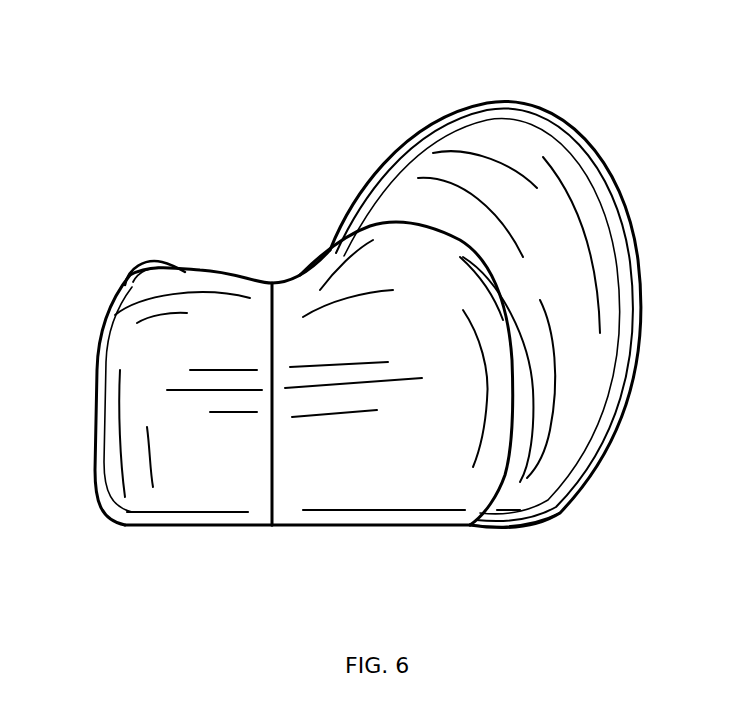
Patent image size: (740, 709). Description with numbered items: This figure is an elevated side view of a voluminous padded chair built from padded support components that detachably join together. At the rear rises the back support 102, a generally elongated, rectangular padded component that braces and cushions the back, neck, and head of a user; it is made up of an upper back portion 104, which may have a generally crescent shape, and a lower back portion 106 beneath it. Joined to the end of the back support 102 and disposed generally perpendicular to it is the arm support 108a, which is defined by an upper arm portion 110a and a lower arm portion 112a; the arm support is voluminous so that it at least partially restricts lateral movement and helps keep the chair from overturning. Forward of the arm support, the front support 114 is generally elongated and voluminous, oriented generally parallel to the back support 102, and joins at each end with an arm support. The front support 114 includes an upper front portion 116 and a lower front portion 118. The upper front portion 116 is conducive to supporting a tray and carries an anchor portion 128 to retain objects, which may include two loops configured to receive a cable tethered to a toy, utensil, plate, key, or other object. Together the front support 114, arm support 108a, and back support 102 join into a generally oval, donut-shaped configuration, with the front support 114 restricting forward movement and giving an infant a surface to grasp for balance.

The back support 102 is at (575, 260).
The upper back portion 104 is at (502, 100).
The lower back portion 106 is at (508, 533).
The arm support 108a is at (425, 450).
The upper arm portion 110a is at (408, 238).
The lower arm portion 112a is at (360, 528).
The front support 114 is at (222, 447).
The upper front portion 116 is at (200, 270).
The lower front portion 118 is at (175, 530).
The anchor portion 128 is at (148, 262).